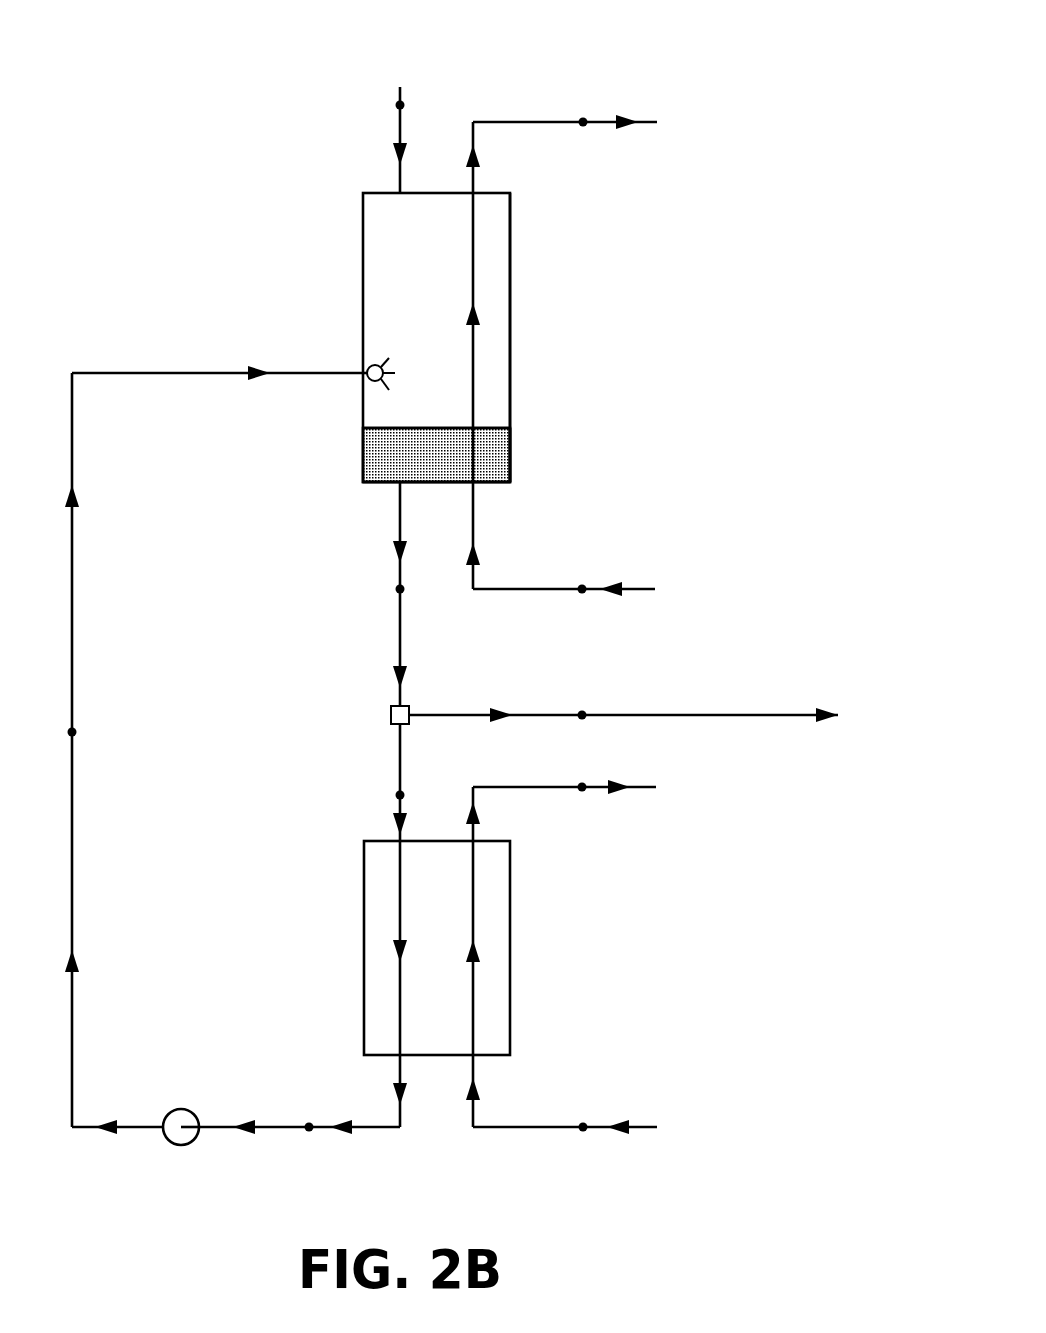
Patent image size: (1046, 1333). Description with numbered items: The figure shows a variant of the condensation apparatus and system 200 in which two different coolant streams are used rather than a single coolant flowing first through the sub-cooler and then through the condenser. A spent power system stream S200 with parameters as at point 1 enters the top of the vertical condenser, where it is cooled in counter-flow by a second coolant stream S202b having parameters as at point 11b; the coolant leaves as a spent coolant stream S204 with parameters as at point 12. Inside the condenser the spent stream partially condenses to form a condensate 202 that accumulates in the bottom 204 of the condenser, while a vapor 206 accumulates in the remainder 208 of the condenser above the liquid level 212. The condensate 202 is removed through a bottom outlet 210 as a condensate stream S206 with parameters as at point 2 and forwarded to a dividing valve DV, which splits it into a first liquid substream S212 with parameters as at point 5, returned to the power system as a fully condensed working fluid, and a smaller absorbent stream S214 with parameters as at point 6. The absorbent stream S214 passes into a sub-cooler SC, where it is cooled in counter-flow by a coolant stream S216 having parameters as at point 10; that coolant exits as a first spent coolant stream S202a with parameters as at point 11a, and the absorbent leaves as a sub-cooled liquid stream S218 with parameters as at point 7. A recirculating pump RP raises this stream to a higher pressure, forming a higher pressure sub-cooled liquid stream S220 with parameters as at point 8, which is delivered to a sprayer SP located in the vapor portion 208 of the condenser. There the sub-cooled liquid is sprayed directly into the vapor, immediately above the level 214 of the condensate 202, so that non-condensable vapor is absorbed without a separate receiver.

The condensation apparatus and system 200 is at (806, 321).
The vapor 206 is at (492, 293).
The remainder of the condenser 208 is at (518, 355).
The condensate 202 is at (492, 453).
The liquid level 212 is at (492, 427).
The bottom of the condenser 204 is at (518, 455).
The bottom outlet 210 is at (392, 482).
The level of the condensate 214 is at (360, 375).
The sprayer SP is at (373, 364).
The spent power system stream S200 is at (402, 132).
The spent coolant stream S204 is at (602, 122).
The second coolant stream S202b is at (598, 588).
The condensate stream S206 is at (398, 633).
The dividing valve DV is at (390, 714).
The first liquid substream S212 is at (615, 716).
The absorbent stream S214 is at (398, 810).
The sub-cooler SC is at (453, 961).
The first spent coolant stream S202a is at (597, 788).
The coolant stream S216 is at (547, 1127).
The sub-cooled liquid stream S218 is at (288, 1127).
The recirculating pump RP is at (181, 1111).
The higher pressure sub-cooled liquid stream S220 is at (73, 570).
The point 1 is at (391, 104).
The point 12 is at (582, 109).
The point 2 is at (391, 587).
The point 11b is at (582, 612).
The point 5 is at (583, 733).
The point 6 is at (410, 795).
The point 11a is at (582, 810).
The point 7 is at (309, 1142).
The point 10 is at (583, 1145).
The point 8 is at (82, 732).